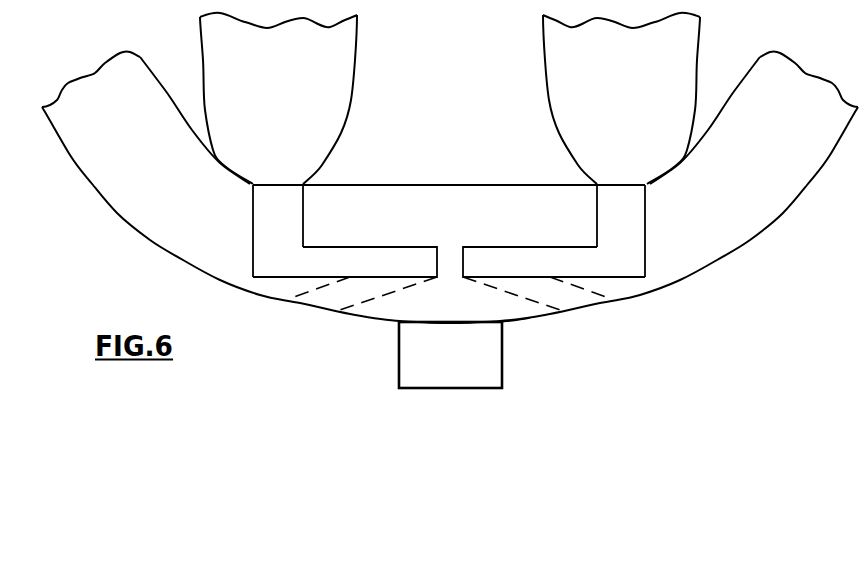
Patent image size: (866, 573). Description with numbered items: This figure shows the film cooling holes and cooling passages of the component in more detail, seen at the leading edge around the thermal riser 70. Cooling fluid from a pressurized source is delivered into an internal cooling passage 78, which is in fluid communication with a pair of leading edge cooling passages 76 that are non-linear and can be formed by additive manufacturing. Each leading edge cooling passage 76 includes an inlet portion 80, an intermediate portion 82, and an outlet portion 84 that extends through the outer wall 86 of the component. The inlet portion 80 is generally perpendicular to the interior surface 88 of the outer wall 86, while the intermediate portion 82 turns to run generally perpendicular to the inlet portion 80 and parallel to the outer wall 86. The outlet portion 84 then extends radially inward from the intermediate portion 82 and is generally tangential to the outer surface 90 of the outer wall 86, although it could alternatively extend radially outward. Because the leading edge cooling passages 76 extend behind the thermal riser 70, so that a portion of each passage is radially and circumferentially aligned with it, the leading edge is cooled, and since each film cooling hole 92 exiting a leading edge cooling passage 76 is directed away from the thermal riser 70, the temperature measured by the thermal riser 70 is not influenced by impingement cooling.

The thermal riser 70 is at (398, 367).
The leading edge cooling passages 76 is at (341, 212).
The internal cooling passage 78 is at (344, 72).
The inlet portion 80 is at (268, 208).
The intermediate portion 82 is at (382, 258).
The outlet portion 84 is at (263, 285).
The outer wall 86 is at (530, 308).
The interior surface 88 is at (423, 184).
The outer surface 90 is at (515, 322).
The film cooling hole 92 is at (313, 310).